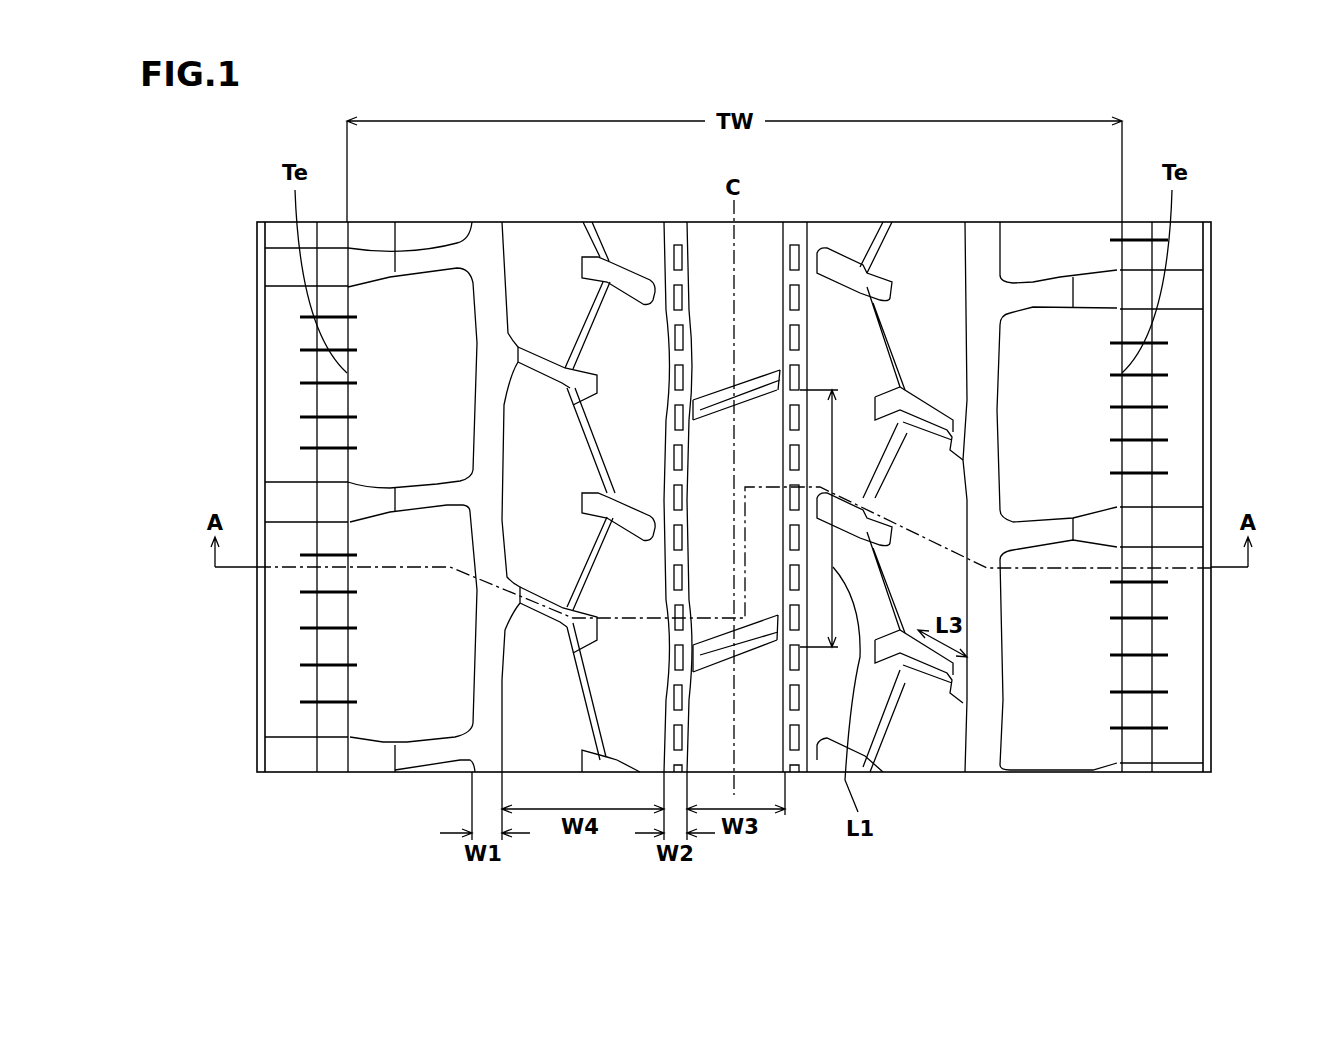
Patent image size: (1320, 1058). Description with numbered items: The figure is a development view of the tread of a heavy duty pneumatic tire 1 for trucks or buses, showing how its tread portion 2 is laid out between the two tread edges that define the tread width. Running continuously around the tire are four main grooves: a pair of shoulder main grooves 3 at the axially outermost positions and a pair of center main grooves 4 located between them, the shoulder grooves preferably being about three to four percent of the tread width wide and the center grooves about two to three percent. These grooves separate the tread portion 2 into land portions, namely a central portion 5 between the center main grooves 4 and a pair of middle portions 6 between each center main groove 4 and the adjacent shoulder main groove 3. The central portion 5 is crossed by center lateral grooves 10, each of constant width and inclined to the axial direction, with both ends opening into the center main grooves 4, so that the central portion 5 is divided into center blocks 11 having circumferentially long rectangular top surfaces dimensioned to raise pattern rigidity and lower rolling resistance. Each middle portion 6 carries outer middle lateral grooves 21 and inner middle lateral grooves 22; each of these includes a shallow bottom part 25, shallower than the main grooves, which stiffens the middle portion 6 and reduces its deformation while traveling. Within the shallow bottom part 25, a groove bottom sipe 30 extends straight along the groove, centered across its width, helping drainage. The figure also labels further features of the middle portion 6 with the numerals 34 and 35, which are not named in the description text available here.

The heavy duty pneumatic tire 1 is at (1037, 201).
The tread portion 2 is at (734, 497).
The shoulder main groove 3 is at (491, 242).
The center main groove 4 is at (674, 252).
The central portion 5 is at (720, 238).
The middle portion 6 is at (553, 237).
The center lateral groove 10 is at (723, 397).
The center block 11 is at (757, 433).
The outer middle lateral groove 21 is at (537, 612).
The inner middle lateral groove 22 is at (958, 520).
The shallow bottom part 25 is at (580, 420).
The groove bottom sipe 30 is at (566, 350).
The lug portion 34 is at (583, 520).
The connecting sipe 35 is at (572, 343).